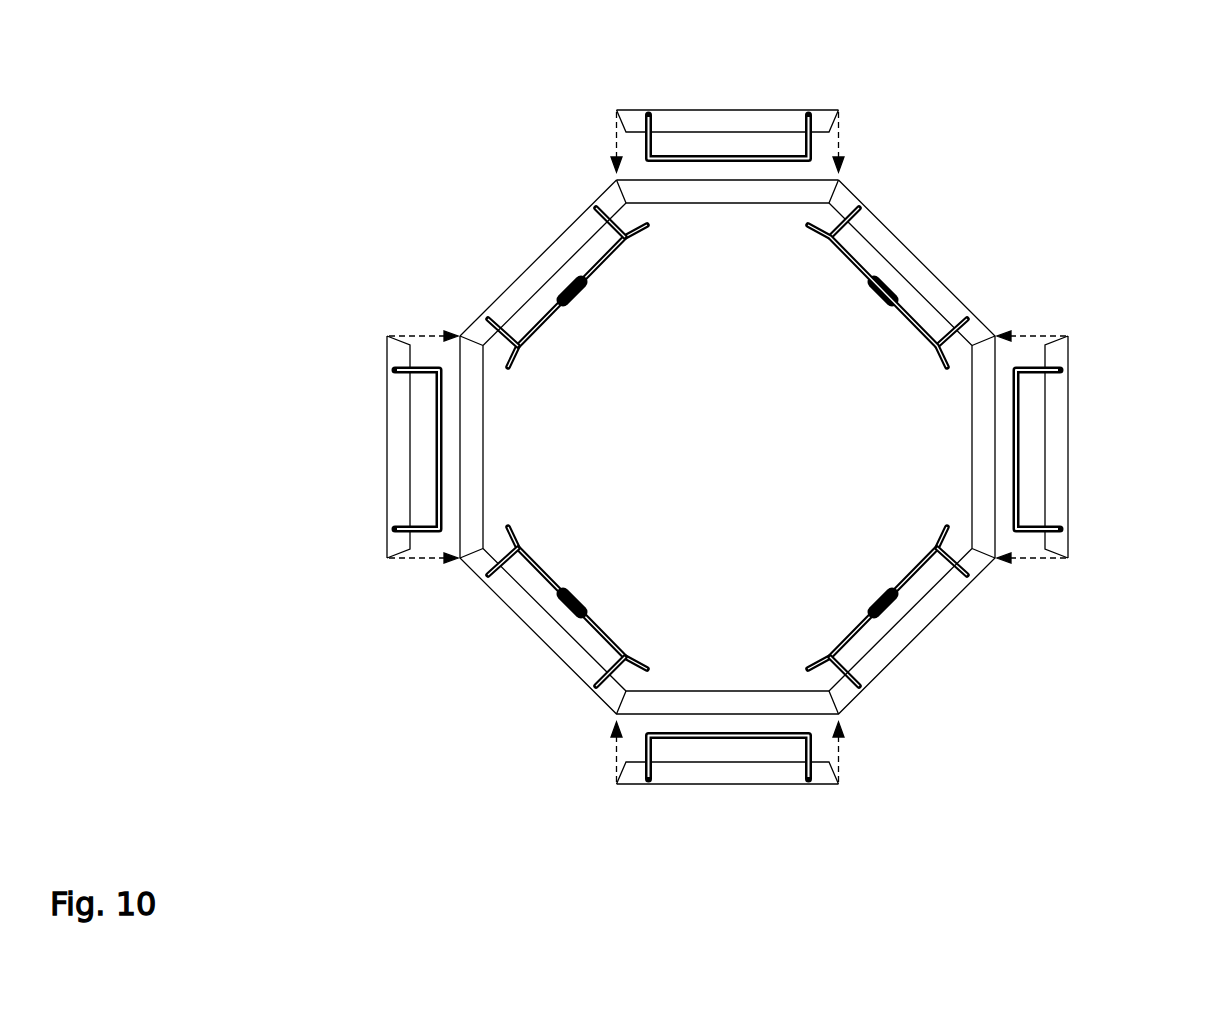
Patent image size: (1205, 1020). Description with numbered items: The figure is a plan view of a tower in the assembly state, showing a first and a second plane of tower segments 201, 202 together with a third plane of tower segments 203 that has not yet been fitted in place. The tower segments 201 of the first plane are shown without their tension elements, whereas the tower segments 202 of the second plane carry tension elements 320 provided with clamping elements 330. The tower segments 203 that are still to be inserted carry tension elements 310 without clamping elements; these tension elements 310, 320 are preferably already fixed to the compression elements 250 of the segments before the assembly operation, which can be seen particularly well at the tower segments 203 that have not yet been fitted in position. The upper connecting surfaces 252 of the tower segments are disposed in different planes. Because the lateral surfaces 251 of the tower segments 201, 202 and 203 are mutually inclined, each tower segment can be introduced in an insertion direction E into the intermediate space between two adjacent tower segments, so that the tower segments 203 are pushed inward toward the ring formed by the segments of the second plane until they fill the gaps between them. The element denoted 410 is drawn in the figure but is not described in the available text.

The tower segments in the first plane 201 is at (738, 228).
The tower segments in the second plane 202 is at (714, 446).
The tower segments in the third plane 203 is at (720, 447).
The compression elements 250 is at (516, 304).
The lateral surfaces 251 is at (616, 110).
The upper connecting surfaces 252 is at (838, 775).
The tension elements 310 is at (714, 152).
The tension elements 320 is at (904, 340).
The clamping elements 330 is at (578, 306).
The bracket of side plate 410 is at (476, 593).
The insertion direction E is at (840, 165).